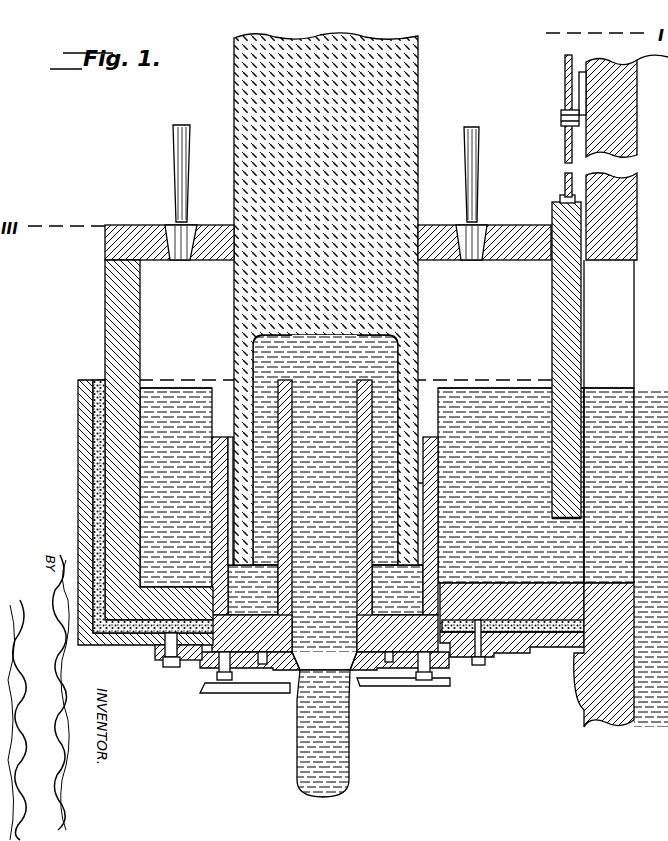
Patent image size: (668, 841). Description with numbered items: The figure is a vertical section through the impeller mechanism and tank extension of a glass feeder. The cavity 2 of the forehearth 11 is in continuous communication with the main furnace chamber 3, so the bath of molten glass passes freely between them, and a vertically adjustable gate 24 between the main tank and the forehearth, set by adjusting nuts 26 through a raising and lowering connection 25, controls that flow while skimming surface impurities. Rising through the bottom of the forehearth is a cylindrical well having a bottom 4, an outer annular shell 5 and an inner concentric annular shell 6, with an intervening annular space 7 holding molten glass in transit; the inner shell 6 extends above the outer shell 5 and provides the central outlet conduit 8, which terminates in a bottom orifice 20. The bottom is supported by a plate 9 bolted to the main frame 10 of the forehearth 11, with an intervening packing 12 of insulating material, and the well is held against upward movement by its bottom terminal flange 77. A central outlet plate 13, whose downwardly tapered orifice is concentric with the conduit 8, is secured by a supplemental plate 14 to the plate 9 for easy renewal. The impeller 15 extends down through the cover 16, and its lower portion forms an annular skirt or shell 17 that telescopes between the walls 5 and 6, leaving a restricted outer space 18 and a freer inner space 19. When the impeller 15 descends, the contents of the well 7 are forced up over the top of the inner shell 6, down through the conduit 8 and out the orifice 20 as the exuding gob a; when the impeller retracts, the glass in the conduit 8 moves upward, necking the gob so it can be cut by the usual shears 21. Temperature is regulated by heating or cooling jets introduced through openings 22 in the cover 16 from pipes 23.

The cavity 2 is at (439, 318).
The main furnace chamber 3 is at (621, 391).
The bottom 4 is at (367, 640).
The outer annular shell 5 is at (218, 470).
The inner concentric annular shell 6 is at (285, 516).
The annular space 7 is at (397, 593).
The central outlet conduit 8 is at (327, 420).
The plate 9 is at (197, 657).
The main frame 10 is at (110, 640).
The forehearth 11 is at (110, 321).
The packing 12 is at (97, 381).
The central outlet plate 13 is at (277, 667).
The supplemental plate 14 is at (233, 670).
The impeller 15 is at (240, 95).
The cover 16 is at (143, 228).
The annular skirt or shell 17 is at (247, 362).
The outer space 18 is at (233, 447).
The inner space 19 is at (387, 422).
The bottom orifice 20 is at (307, 673).
The shears 21 is at (222, 692).
The openings 22 is at (178, 262).
The pipes 23 is at (178, 150).
The vertically adjustable gate 24 is at (552, 303).
The raising and lowering connection 25 is at (565, 147).
The adjusting nuts 26 is at (564, 113).
The bottom terminal flange 77 is at (452, 648).
The gob a is at (310, 770).